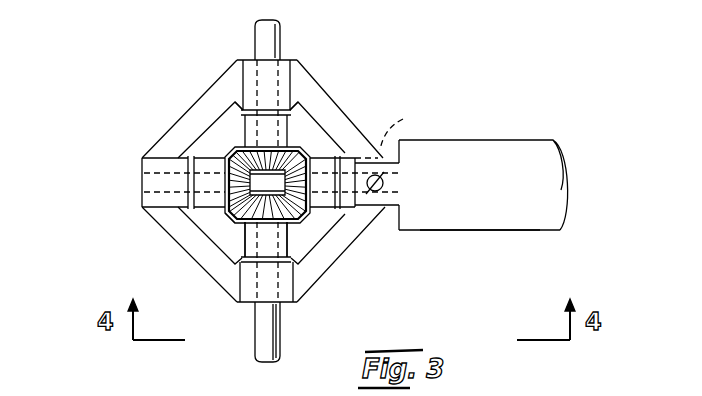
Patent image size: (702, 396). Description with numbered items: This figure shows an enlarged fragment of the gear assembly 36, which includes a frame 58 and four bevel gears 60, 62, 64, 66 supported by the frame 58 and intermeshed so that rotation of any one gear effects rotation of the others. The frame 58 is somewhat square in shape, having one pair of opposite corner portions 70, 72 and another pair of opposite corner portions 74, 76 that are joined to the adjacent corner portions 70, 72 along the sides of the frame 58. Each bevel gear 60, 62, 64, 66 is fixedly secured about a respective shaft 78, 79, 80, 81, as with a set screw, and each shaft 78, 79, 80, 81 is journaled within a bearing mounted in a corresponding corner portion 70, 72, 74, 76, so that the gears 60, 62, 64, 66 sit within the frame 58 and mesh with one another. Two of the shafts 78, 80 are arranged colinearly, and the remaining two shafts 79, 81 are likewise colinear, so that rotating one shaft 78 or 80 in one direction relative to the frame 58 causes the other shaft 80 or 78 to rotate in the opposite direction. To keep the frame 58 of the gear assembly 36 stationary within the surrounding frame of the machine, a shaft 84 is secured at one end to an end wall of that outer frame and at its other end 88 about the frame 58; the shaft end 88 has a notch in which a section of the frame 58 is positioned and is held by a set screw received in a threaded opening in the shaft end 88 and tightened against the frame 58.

The gear assembly 36 is at (205, 110).
The frame 58 is at (205, 252).
The bevel gear 60 is at (288, 142).
The bevel gear 62 is at (308, 218).
The bevel gear 64 is at (287, 235).
The bevel gear 66 is at (227, 220).
The corner portion 70 is at (283, 82).
The corner portion 72 is at (372, 212).
The corner portion 74 is at (238, 290).
The corner portion 76 is at (163, 160).
The shaft 78 is at (277, 40).
The shaft 79 is at (395, 134).
The shaft 80 is at (277, 340).
The shaft 81 is at (145, 184).
The shaft 84 is at (492, 157).
The shaft end 88 is at (465, 210).